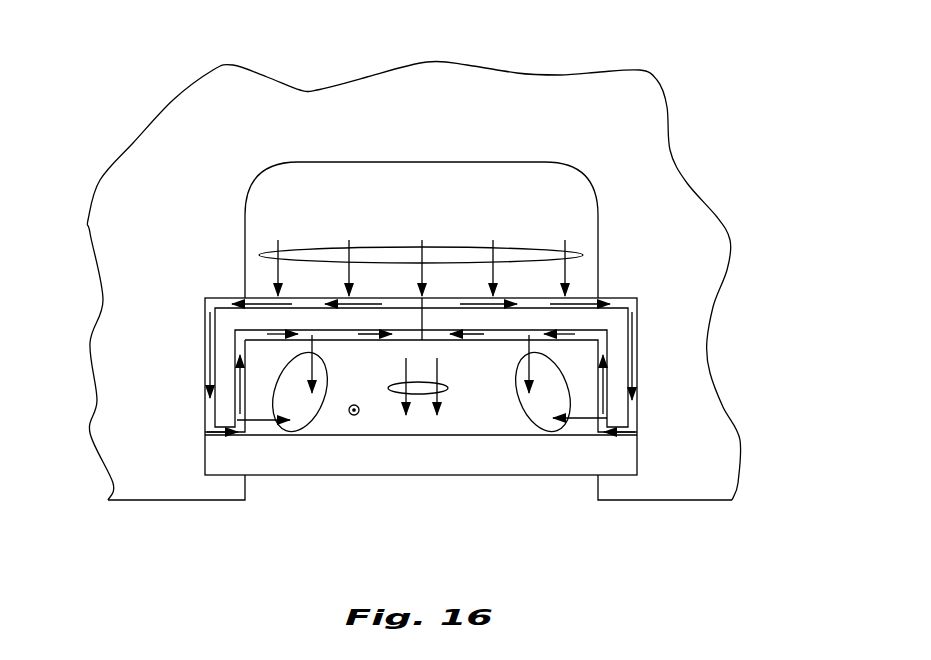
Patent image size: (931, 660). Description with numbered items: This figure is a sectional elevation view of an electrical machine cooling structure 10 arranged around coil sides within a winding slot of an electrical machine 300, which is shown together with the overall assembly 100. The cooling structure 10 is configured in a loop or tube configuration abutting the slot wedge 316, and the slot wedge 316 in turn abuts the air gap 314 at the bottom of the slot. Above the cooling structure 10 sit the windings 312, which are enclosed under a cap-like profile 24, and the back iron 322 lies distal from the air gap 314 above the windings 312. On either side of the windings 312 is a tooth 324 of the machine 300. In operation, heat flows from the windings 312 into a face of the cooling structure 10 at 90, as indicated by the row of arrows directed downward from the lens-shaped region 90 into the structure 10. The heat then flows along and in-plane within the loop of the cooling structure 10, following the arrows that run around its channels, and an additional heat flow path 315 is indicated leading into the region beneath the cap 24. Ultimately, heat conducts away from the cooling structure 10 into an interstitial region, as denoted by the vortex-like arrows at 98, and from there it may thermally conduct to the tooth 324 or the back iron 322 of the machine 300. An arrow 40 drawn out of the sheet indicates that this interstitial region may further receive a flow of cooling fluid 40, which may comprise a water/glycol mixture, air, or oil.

The electrical machine cooling structure 10 is at (633, 288).
The cap 24 is at (563, 165).
The cooling fluid 40 is at (353, 417).
The heat flow into face of structure 90 is at (512, 250).
The heat leaving the structure 98 is at (327, 377).
The treatment system 100 is at (390, 253).
The machine 300 is at (138, 73).
The windings 312 is at (372, 210).
The air gap 314 is at (460, 514).
The air flow path 315 is at (555, 197).
The slot wedge 316 is at (655, 342).
The back iron 322 is at (450, 127).
The tooth 324 is at (172, 398).